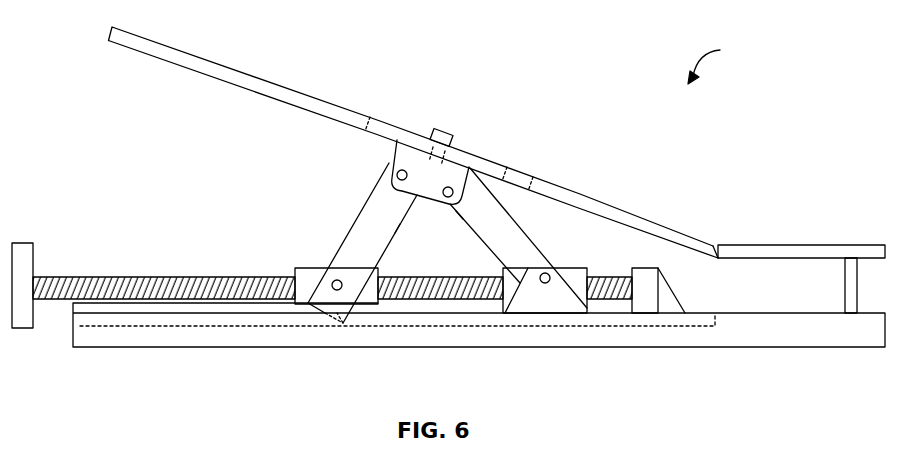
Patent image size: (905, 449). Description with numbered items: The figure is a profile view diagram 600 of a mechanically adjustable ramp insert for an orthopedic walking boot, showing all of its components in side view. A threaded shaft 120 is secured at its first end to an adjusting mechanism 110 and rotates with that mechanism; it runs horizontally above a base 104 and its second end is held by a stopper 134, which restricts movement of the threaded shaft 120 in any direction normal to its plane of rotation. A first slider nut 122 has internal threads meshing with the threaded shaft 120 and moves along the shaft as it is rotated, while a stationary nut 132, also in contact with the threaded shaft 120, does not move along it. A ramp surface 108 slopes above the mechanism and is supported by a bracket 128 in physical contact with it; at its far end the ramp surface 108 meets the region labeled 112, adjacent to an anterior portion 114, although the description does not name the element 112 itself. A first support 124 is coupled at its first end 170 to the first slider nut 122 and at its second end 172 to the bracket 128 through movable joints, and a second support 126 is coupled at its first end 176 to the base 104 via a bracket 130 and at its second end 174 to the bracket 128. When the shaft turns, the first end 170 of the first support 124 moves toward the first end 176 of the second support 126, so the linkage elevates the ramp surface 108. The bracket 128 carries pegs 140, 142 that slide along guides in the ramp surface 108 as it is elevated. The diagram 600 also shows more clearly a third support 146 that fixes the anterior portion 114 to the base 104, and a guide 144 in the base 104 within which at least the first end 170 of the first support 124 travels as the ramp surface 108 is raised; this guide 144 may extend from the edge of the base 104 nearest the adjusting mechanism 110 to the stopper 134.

The base 104 is at (830, 337).
The ramp surface 108 is at (188, 52).
The adjusting mechanism 110 is at (23, 250).
The pivot end of board 112 is at (713, 250).
The anterior portion 114 is at (802, 250).
The threaded shaft 120 is at (134, 283).
The first slider nut 122 is at (300, 268).
The first support 124 is at (360, 228).
The second support 126 is at (508, 253).
The bracket 128 is at (394, 170).
The bracket 130 is at (550, 305).
The stationary nut 132 is at (570, 275).
The stopper 134 is at (642, 290).
The peg 140 is at (445, 132).
The peg 142 is at (438, 155).
The guide 144 is at (165, 318).
The third support 146 is at (853, 300).
The first end of first support 170 is at (343, 305).
The second end of first support 172 is at (394, 197).
The second end of second support 174 is at (462, 202).
The first end of second support 176 is at (522, 276).
The profile view diagram 600 is at (737, 62).